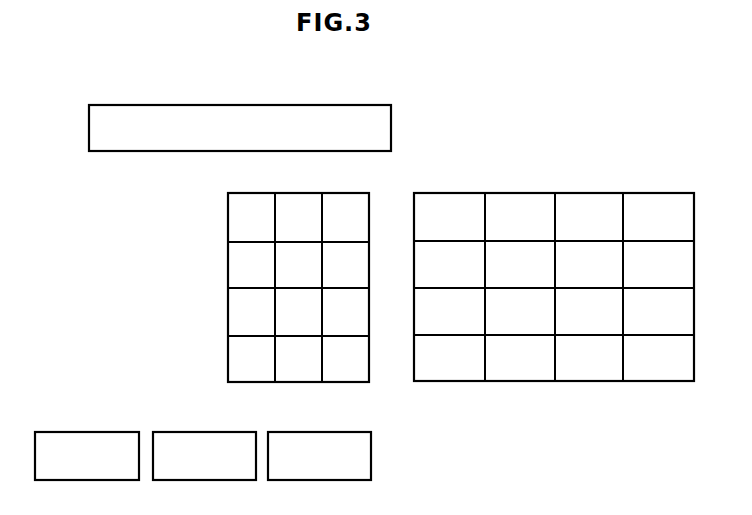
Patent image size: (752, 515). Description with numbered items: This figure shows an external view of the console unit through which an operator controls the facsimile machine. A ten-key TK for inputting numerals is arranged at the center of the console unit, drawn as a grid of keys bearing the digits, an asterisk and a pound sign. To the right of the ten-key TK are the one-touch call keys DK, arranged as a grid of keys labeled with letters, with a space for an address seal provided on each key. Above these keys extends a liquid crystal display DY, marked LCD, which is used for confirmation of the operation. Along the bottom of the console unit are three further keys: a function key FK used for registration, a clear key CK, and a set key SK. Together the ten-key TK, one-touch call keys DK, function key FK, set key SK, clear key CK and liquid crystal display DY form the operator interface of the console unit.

The liquid crystal display DY is at (289, 105).
The ten-key TK is at (312, 193).
The one-touch call keys DK is at (612, 193).
The function key FK is at (87, 432).
The clear key CK is at (202, 432).
The set key SK is at (316, 432).